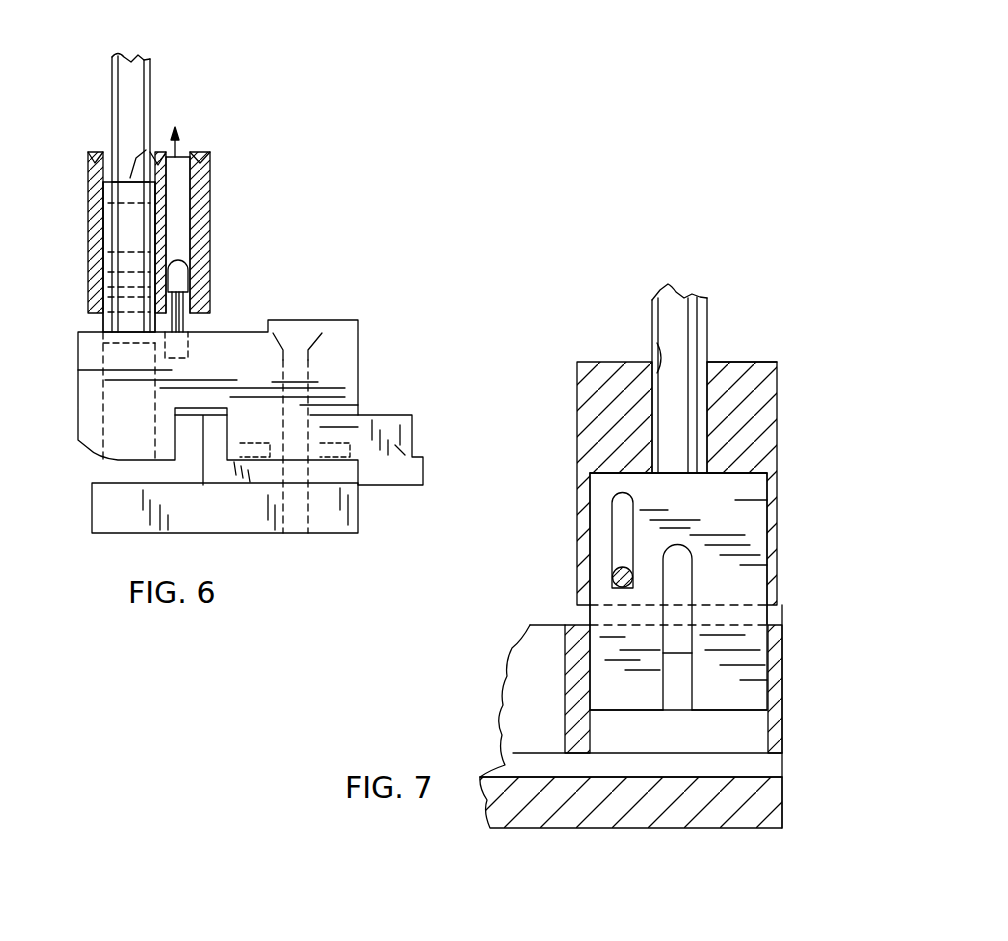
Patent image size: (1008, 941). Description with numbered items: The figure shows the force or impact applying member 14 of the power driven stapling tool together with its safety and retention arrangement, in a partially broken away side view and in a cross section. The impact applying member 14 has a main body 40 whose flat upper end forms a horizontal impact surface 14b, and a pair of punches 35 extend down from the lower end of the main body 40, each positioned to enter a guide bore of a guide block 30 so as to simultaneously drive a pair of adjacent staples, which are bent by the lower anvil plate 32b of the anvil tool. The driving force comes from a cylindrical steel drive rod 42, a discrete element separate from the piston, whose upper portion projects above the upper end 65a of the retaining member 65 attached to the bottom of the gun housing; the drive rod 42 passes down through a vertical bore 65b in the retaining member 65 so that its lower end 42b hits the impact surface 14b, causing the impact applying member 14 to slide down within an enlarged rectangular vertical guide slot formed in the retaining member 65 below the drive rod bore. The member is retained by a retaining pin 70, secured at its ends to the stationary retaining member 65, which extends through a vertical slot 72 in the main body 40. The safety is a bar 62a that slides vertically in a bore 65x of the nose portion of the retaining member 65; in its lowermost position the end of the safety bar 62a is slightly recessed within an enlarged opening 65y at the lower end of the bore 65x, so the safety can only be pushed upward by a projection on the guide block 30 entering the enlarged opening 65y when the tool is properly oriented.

In FIG. 6, the impact applying member 14 is at (113, 320).
In FIG. 7, the impact applying member 14 is at (773, 615).
In FIG. 6, the impact surface 14b is at (132, 178).
In FIG. 7, the impact surface 14b is at (727, 470).
In FIG. 6, the guide block 30 is at (365, 357).
In FIG. 7, the guide block 30 is at (782, 710).
In FIG. 6, the lower anvil plate 32b is at (352, 505).
In FIG. 7, the lower anvil plate 32b is at (753, 803).
In FIG. 7, the punch 35 is at (762, 647).
In FIG. 6, the main body 40 is at (123, 238).
In FIG. 7, the main body 40 is at (747, 513).
In FIG. 6, the drive rod 42 is at (146, 78).
In FIG. 7, the drive rod 42 is at (693, 316).
In FIG. 6, the lower end of drive rod 42b is at (137, 185).
In FIG. 7, the lower end of drive rod 42b is at (660, 455).
In FIG. 6, the safety bar 62a is at (172, 193).
In FIG. 6, the retaining member 65 is at (212, 230).
In FIG. 7, the retaining member 65 is at (585, 386).
In FIG. 7, the upper end of retaining member 65a is at (738, 363).
In FIG. 7, the vertical bore 65b is at (655, 347).
In FIG. 6, the bore 65x is at (206, 173).
In FIG. 6, the enlarged opening 65y is at (190, 283).
In FIG. 7, the retaining pin 70 is at (613, 585).
In FIG. 7, the vertical slot 72 is at (615, 507).